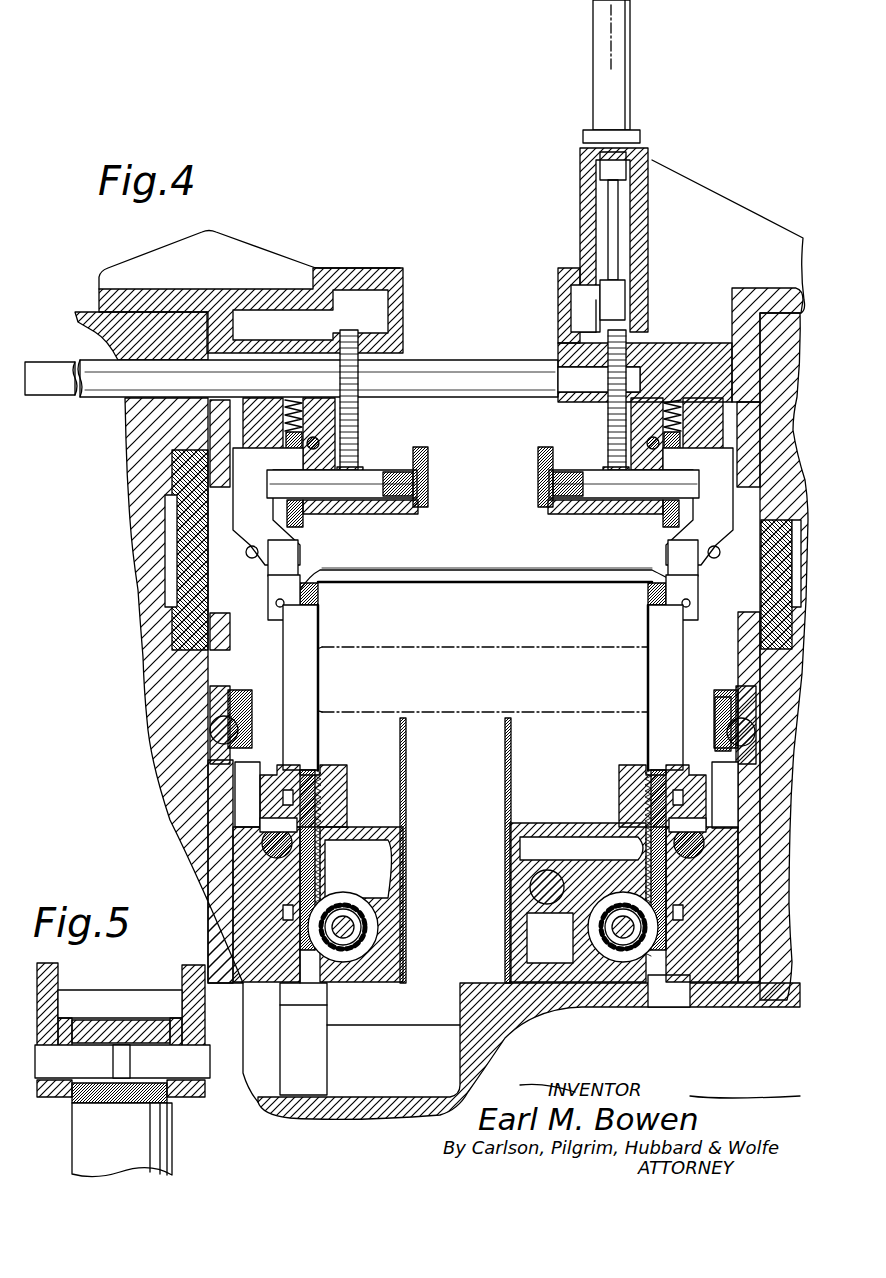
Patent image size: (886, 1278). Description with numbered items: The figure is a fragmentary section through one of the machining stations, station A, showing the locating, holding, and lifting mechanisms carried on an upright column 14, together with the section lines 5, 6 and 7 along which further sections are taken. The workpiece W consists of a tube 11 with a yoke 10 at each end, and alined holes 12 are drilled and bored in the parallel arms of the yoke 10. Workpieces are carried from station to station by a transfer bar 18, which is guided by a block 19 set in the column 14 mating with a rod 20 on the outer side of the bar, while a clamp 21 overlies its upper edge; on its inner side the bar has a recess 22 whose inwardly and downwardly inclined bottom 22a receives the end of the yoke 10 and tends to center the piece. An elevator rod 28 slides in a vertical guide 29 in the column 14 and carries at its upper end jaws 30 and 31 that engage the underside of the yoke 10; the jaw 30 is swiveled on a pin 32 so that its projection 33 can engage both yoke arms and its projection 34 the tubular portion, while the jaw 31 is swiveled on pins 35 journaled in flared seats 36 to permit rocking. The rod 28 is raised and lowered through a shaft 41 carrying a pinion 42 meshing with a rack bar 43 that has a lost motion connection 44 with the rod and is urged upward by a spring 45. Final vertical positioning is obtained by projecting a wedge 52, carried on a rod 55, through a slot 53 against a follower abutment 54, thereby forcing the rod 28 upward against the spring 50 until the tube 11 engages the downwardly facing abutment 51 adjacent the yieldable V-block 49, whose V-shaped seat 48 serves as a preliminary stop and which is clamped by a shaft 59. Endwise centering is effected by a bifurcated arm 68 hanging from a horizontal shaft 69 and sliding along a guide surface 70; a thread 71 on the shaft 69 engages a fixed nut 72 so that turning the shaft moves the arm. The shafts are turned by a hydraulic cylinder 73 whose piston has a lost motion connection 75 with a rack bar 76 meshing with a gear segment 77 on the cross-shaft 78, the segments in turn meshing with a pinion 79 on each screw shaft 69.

In FIG. 4, the section line 5— 5 is at (278, 568).
In FIG. 4, the section line 6— 6 is at (172, 845).
In FIG. 4, the section line 7— 7 is at (622, 37).
In FIG. 4, the yoke 10 is at (252, 584).
In FIG. 4, the tube 11 is at (482, 585).
In FIG. 4, the alined holes 12 is at (248, 560).
In FIG. 4, the upright column 14 is at (163, 768).
In FIG. 4, the transfer bar 18 is at (718, 706).
In FIG. 4, the guide block 19 is at (712, 764).
In FIG. 4, the rod 20 is at (232, 742).
In FIG. 4, the clamp 21 is at (268, 688).
In FIG. 4, the recess 22 is at (250, 698).
In FIG. 4, the inclined bottom 22a is at (483, 681).
In FIG. 4, the elevator rod 28 is at (320, 745).
In FIG. 4, the vertical guide 29 is at (348, 792).
In FIG. 4, the jaw 30 is at (727, 604).
In FIG. 4, the jaw 31 is at (272, 603).
In FIG. 5, the jaw 31 is at (200, 1022).
In FIG. 4, the pin 32 is at (277, 607).
In FIG. 5, the projection 33 is at (52, 966).
In FIG. 4, the projection 34 is at (300, 578).
In FIG. 5, the projection 34 is at (146, 991).
In FIG. 5, the pin 35 is at (210, 1066).
In FIG. 5, the flared seat 36 is at (75, 1100).
In FIG. 4, the shaft 41 is at (352, 912).
In FIG. 4, the pinion 42 is at (606, 901).
In FIG. 4, the rack bar 43 is at (323, 862).
In FIG. 4, the lost motion connection 44 is at (282, 912).
In FIG. 4, the spring 45 is at (282, 939).
In FIG. 4, the V-shaped seat 48 is at (300, 548).
In FIG. 4, the V-block 49 is at (303, 522).
In FIG. 4, the spring 50 is at (287, 404).
In FIG. 4, the abutment 51 is at (292, 560).
In FIG. 4, the wedge 52 is at (268, 845).
In FIG. 4, the slot 53 is at (290, 863).
In FIG. 4, the follower abutment 54 is at (486, 820).
In FIG. 4, the rod 55 is at (264, 850).
In FIG. 4, the shaft 59 is at (313, 436).
In FIG. 4, the bifurcated arm 68 is at (242, 562).
In FIG. 4, the horizontal shaft 69 is at (316, 478).
In FIG. 4, the guide surface 70 is at (255, 458).
In FIG. 4, the screw thread 71 is at (426, 484).
In FIG. 4, the nut 72 is at (405, 513).
In FIG. 4, the hydraulic cylinder 73 is at (630, 80).
In FIG. 4, the lost motion connection 75 is at (627, 300).
In FIG. 4, the rack bar 76 is at (640, 318).
In FIG. 4, the gear segment 77 is at (358, 446).
In FIG. 4, the cross-shaft 78 is at (482, 372).
In FIG. 4, the pinion 79 is at (360, 514).
In FIG. 4, the machining station A is at (418, 266).
In FIG. 4, the workpiece W is at (478, 516).